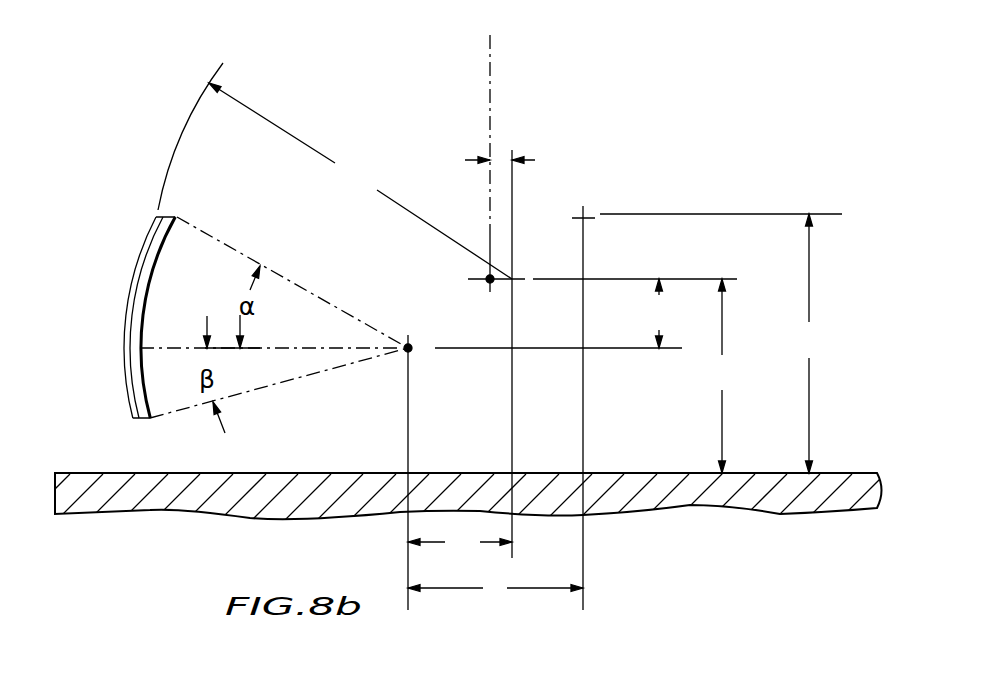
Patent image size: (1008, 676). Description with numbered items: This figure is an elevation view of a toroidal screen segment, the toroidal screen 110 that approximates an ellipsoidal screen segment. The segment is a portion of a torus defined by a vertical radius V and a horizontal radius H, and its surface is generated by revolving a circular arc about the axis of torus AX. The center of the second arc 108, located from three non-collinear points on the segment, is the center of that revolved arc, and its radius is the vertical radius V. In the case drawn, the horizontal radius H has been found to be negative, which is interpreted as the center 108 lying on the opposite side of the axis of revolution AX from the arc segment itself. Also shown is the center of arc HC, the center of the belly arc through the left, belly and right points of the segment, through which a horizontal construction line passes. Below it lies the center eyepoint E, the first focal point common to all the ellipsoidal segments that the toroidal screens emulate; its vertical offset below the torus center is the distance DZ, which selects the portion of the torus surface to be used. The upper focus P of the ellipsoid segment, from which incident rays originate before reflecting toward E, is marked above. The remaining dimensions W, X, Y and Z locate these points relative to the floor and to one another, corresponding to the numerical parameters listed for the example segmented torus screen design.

The toroidal screen 110 is at (128, 310).
The center of the second arc 108 is at (518, 266).
The vertical radius of torus V is at (335, 171).
The axis of torus AX is at (488, 88).
The horizontal radius of torus H is at (500, 158).
The center of arc LB-BB-RB HC is at (589, 278).
The center eyepoint E is at (543, 462).
The upper focus of ellipsoid segment P is at (707, 408).
The element W is at (806, 343).
The element X is at (719, 376).
The distance of E below center of torus DZ is at (656, 313).
The element Y is at (460, 541).
The element Z is at (495, 587).